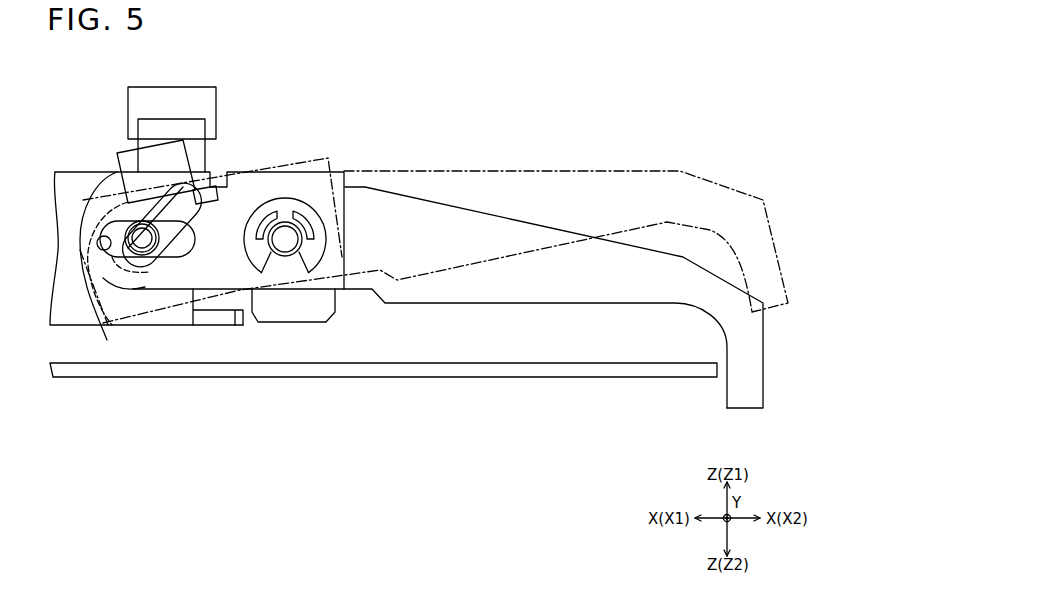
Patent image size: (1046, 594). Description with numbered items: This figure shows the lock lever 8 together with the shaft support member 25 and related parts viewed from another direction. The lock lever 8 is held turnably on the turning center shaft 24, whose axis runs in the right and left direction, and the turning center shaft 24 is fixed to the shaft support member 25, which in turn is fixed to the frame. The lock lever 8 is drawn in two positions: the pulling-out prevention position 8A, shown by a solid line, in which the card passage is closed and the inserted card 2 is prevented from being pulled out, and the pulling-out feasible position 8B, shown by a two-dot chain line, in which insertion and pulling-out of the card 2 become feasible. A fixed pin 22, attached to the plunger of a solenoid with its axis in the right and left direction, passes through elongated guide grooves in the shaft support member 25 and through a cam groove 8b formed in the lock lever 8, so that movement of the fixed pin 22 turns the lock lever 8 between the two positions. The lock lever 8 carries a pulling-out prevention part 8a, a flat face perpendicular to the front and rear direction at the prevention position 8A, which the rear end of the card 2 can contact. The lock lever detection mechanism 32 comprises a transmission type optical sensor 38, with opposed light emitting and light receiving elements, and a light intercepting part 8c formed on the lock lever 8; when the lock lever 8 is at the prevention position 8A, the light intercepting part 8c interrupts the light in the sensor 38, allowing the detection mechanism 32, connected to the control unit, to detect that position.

The card 2 is at (247, 378).
The lock lever 8 is at (441, 262).
The pulling-out prevention position 8A is at (447, 203).
The pulling-out feasible position 8B is at (573, 170).
The pulling-out prevention part 8a is at (740, 260).
The cam groove 8b is at (106, 335).
The light intercepting part 8c is at (121, 152).
The fixed pin 22 is at (140, 258).
The turning center shaft 24 is at (285, 198).
The shaft support member 25 is at (80, 171).
The lock lever detection mechanism 32 is at (188, 126).
The transmission type optical sensor 38 is at (216, 102).